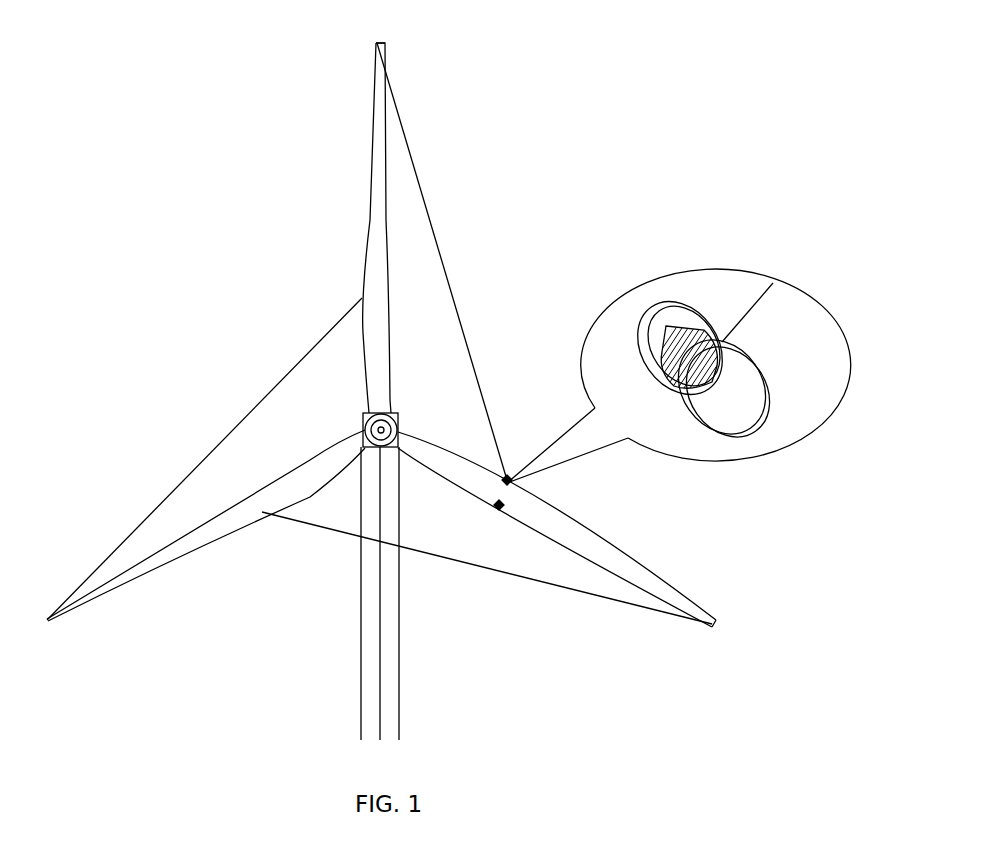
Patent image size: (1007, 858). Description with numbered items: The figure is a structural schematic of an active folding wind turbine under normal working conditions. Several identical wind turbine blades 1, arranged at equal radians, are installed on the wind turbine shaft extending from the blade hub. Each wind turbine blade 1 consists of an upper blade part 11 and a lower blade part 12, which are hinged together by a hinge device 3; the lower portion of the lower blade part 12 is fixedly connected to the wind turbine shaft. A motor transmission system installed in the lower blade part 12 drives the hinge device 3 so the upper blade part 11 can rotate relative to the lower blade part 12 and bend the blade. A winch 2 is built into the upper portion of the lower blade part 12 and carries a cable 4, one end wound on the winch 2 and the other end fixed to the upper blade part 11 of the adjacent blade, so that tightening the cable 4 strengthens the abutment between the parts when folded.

The wind turbine blade 1 is at (374, 250).
The upper blade part 11 is at (387, 45).
The lower blade part 12 is at (377, 290).
The winch 2 is at (669, 318).
The hinge device 3 is at (263, 490).
The cable 4 is at (426, 193).